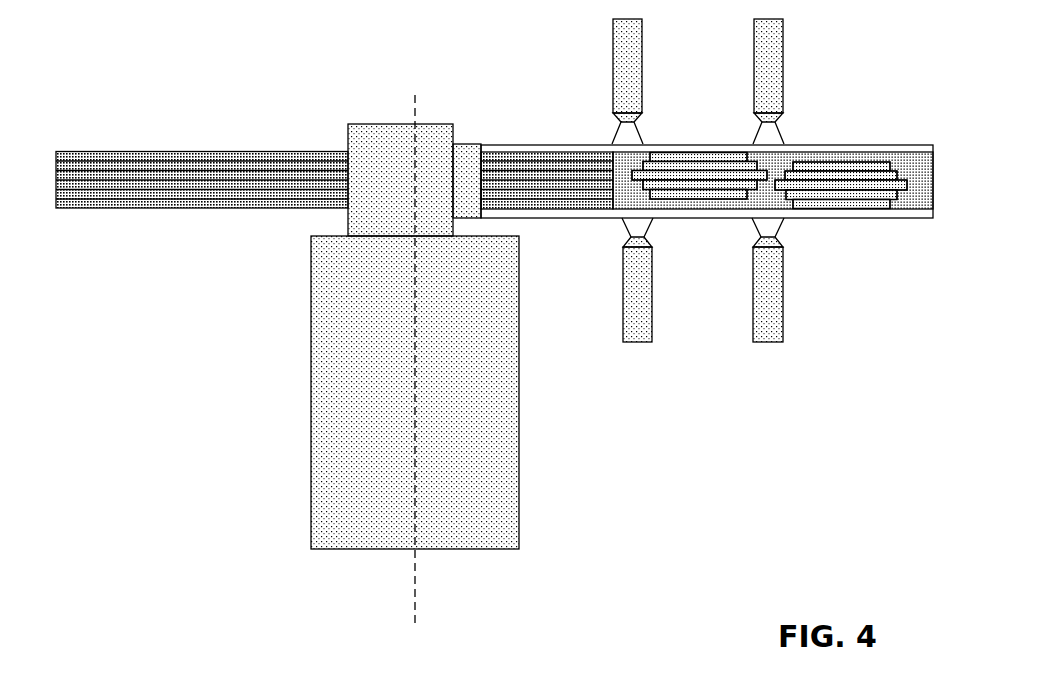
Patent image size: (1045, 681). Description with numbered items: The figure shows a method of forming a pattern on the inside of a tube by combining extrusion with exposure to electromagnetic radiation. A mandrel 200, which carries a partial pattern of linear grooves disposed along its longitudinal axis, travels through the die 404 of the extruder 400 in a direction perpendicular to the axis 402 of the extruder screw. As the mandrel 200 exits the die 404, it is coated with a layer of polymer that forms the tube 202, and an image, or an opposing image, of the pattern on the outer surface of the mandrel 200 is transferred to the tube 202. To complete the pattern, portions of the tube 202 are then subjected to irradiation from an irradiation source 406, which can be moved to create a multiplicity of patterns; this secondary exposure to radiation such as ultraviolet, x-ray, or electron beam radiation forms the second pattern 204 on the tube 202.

The mandrel 200 is at (62, 186).
The tube 202 is at (848, 219).
The second pattern 204 is at (860, 188).
The extruder 400 is at (508, 398).
The axis of the screw 402 is at (415, 580).
The die 404 is at (381, 132).
The irradiation source 406 is at (622, 55).